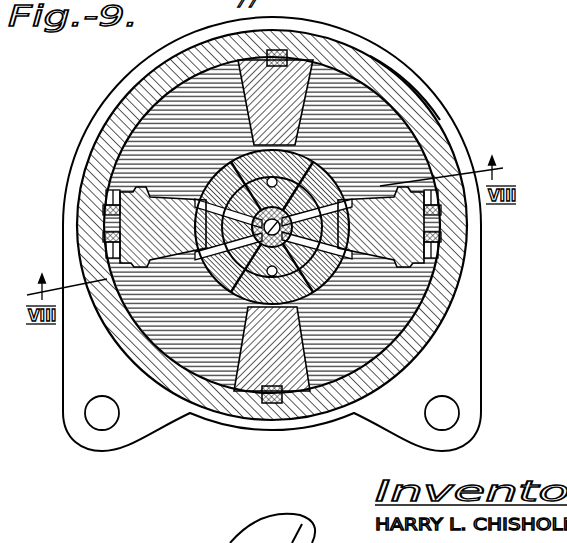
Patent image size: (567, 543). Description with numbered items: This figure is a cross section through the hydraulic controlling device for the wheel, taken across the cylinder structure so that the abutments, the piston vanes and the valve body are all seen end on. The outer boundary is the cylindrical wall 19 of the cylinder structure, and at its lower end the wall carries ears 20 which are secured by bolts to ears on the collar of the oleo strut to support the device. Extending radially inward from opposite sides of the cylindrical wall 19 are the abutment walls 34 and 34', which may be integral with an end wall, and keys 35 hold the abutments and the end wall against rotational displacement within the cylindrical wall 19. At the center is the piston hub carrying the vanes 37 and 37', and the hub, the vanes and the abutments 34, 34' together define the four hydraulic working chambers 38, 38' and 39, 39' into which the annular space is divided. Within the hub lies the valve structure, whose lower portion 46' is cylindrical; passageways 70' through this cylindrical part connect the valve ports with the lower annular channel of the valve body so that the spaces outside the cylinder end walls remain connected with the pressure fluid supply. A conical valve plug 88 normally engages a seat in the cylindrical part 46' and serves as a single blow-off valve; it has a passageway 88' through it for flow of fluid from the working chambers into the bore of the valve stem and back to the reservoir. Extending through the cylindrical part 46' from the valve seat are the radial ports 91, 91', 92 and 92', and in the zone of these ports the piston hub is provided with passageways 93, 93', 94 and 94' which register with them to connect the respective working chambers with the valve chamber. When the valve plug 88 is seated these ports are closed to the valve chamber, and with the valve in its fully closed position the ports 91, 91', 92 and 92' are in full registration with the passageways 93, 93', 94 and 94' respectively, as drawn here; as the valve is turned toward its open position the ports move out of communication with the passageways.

The cylindrical wall 19 is at (93, 182).
The ears 20 is at (78, 424).
The abutment wall 34 is at (261, 102).
The abutment wall 34' is at (254, 349).
The key 35 is at (289, 53).
The vane 37 is at (154, 217).
The vane 37' is at (389, 253).
The hydraulic working chamber 38 is at (235, 408).
The hydraulic working chamber 38' is at (419, 85).
The hydraulic working chamber 39 is at (272, 225).
The hydraulic working chamber 39' is at (250, 225).
The cylindrical lower portion of valve body 46' is at (334, 158).
The passageways 70' is at (279, 213).
The conical valve plug 88 is at (289, 268).
The passageway 88' is at (255, 268).
The radial port 91 is at (228, 281).
The radial port 91' is at (334, 179).
The radial port 92 is at (330, 272).
The radial port 92' is at (228, 169).
The passageway 93 is at (211, 277).
The passageway 93' is at (350, 193).
The passageway 94 is at (323, 291).
The passageway 94' is at (220, 177).